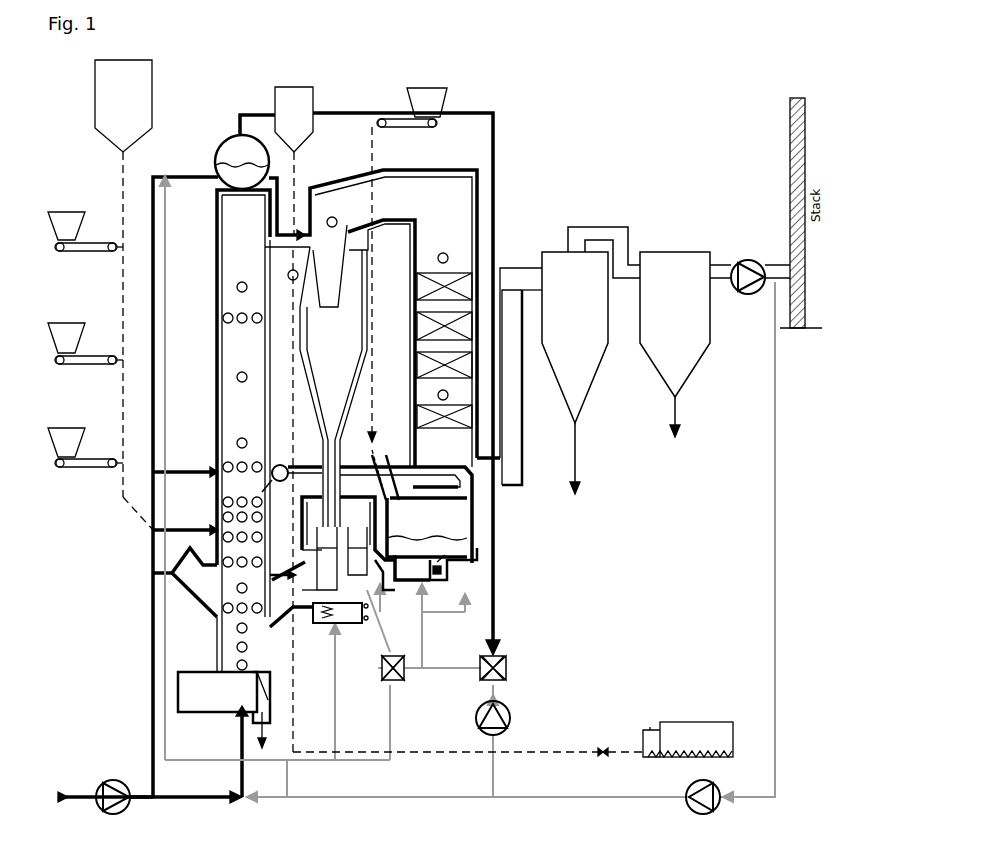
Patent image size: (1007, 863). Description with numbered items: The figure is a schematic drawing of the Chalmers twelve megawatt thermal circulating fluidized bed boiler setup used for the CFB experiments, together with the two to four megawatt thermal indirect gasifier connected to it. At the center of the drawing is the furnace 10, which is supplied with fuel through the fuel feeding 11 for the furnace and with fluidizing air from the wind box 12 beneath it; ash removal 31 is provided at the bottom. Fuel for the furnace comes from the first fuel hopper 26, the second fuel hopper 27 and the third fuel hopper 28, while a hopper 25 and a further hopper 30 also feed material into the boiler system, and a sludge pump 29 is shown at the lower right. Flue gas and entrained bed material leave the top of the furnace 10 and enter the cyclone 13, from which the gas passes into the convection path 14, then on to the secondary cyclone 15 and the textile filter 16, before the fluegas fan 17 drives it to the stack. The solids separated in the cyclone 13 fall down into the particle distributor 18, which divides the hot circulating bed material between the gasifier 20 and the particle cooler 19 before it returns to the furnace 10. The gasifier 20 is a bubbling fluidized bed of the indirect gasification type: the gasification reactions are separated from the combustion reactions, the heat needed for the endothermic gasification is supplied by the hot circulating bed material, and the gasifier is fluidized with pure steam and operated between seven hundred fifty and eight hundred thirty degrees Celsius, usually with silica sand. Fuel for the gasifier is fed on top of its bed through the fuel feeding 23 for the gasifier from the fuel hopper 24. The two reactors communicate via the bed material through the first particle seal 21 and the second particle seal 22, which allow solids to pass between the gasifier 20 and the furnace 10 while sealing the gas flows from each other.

The furnace 10 is at (263, 431).
The fuel feeding (furnace) 11 is at (194, 582).
The wind box 12 is at (217, 692).
The cyclone 13 is at (327, 484).
The convection path 14 is at (393, 322).
The secondary cyclone 15 is at (591, 360).
The textile filter 16 is at (685, 344).
The fluegas fan 17 is at (760, 277).
The particle distributor 18 is at (380, 528).
The particle cooler 19 is at (319, 594).
The gasifier 20 is at (427, 533).
The particle seal 1 21 is at (390, 577).
The particle seal 2 22 is at (456, 579).
The fuel feeding (gasifier) 23 is at (381, 470).
The fuel hopper (gasifier) 24 is at (407, 265).
The hopper 25 is at (124, 295).
The fuel hopper 1 26 is at (85, 231).
The fuel hopper 2 27 is at (85, 343).
The fuel hopper 3 28 is at (85, 447).
The sludge pump 29 is at (513, 739).
The hopper 30 is at (294, 163).
The ash removal 31 is at (261, 715).